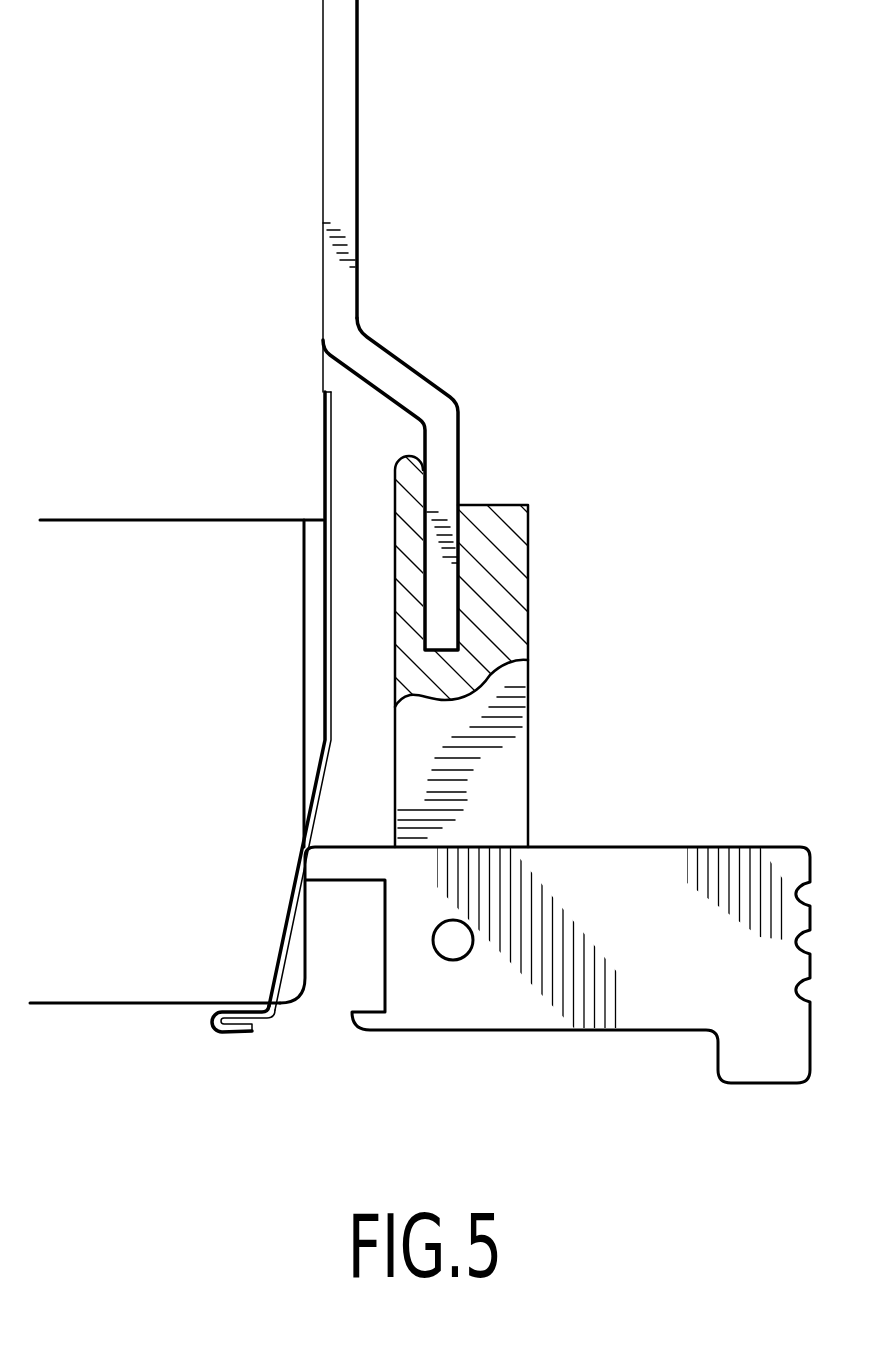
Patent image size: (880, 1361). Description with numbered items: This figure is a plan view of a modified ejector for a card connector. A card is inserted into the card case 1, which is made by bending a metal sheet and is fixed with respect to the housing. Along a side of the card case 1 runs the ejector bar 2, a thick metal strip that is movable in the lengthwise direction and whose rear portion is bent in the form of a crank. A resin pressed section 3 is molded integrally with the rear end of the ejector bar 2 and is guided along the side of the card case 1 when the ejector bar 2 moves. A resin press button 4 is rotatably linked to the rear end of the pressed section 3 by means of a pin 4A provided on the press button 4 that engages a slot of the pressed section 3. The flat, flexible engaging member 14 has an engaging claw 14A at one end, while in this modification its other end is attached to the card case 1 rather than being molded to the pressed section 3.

The card case 1 is at (257, 133).
The ejector bar 2 is at (340, 238).
The pressed section 3 is at (490, 588).
The press button 4 is at (657, 983).
The pin 4A is at (452, 950).
The engaging member 14 is at (323, 632).
The engaging claw 14A is at (205, 1035).